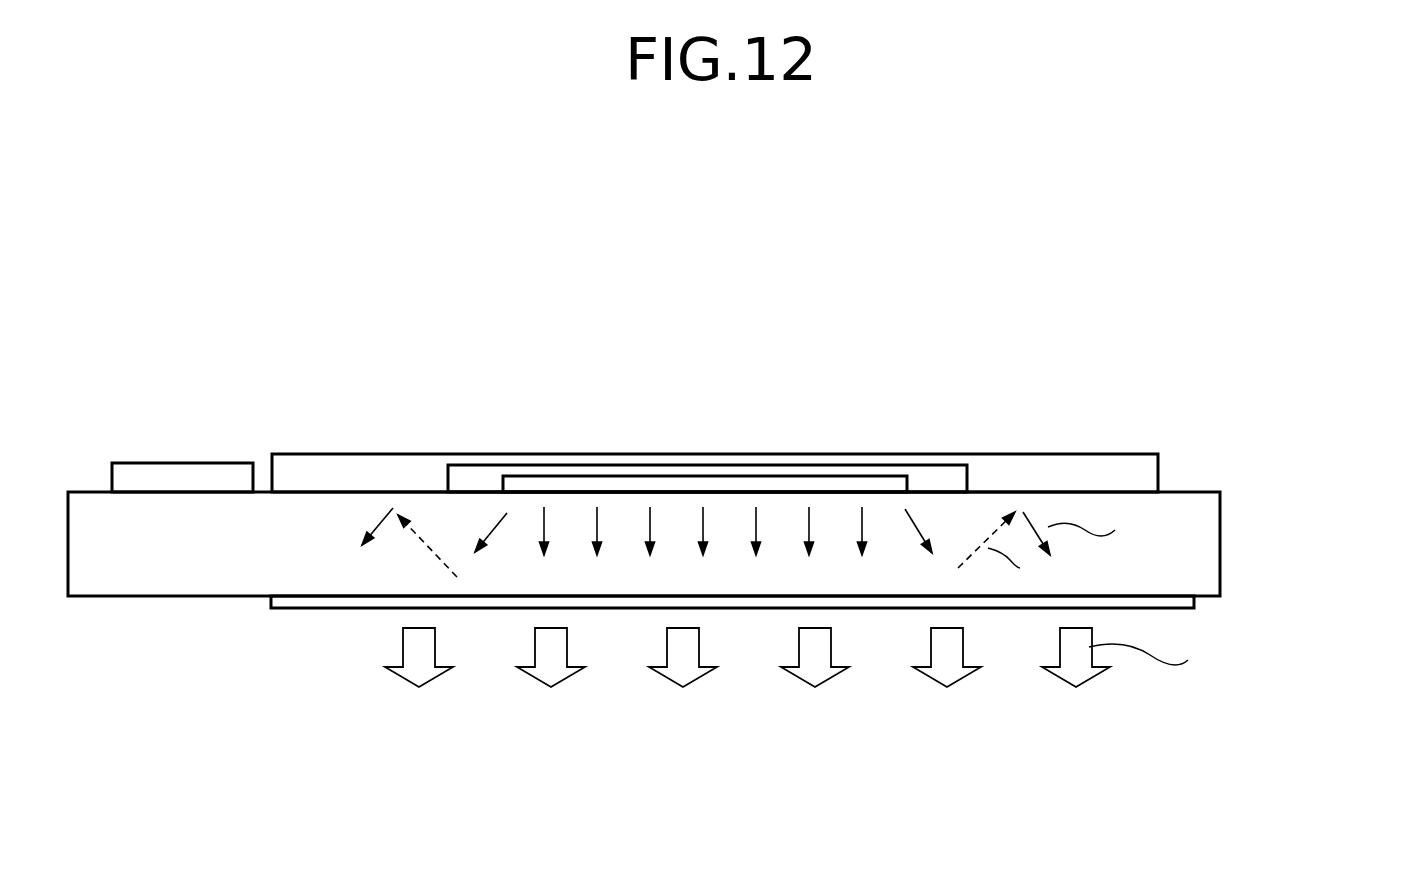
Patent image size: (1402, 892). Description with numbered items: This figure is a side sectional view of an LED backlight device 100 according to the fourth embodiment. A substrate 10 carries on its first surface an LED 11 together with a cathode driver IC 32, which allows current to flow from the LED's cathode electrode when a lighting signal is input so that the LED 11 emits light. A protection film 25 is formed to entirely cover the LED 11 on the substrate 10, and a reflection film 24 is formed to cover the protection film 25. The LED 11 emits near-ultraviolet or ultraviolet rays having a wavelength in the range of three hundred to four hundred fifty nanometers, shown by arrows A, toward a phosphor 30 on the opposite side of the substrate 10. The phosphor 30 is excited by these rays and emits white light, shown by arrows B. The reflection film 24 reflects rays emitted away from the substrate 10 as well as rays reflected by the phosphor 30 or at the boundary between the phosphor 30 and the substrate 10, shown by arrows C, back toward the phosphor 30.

The backlight device 100 is at (1212, 410).
The substrate 10 is at (1220, 523).
The LED 11 is at (587, 477).
The reflection film 24 is at (1020, 467).
The protection film 25 is at (805, 463).
The phosphor 30 is at (303, 611).
The cathode driver IC 32 is at (187, 477).